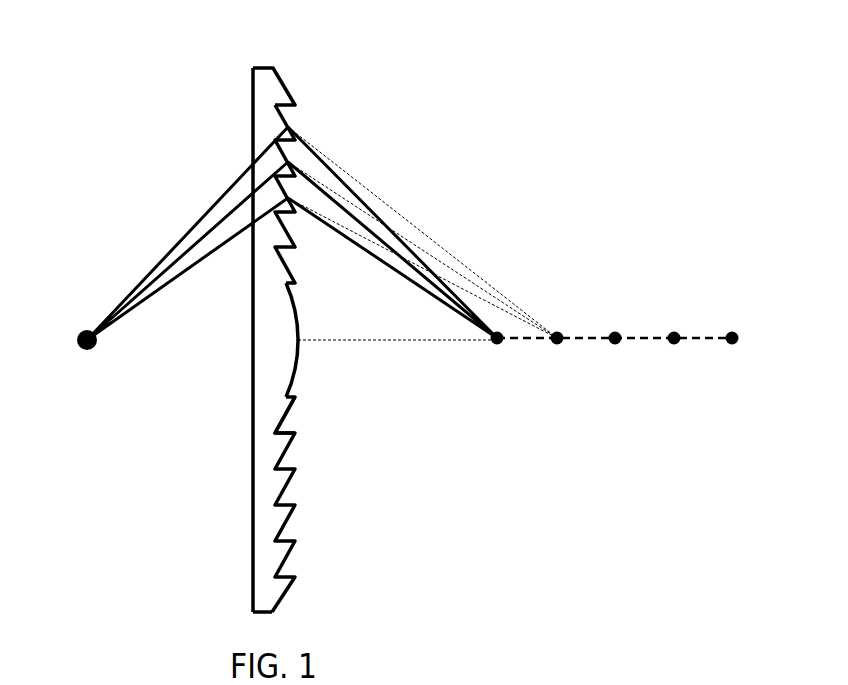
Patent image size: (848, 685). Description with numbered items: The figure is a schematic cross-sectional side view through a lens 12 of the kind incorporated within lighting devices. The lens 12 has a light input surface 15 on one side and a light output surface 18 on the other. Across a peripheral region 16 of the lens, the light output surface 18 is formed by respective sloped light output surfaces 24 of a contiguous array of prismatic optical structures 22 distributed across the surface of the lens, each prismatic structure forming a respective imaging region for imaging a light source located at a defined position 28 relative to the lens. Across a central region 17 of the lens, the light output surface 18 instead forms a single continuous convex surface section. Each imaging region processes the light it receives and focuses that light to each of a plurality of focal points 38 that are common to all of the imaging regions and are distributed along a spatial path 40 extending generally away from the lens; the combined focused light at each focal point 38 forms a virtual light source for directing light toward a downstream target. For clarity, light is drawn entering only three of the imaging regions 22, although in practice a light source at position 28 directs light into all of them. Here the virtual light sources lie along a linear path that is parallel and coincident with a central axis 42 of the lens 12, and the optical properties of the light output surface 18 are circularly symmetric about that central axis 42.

The lens 12 is at (245, 52).
The light input surface 15 is at (202, 421).
The peripheral region 16 is at (245, 399).
The central region 17 is at (243, 285).
The light output surface 18 is at (324, 409).
The prismatic optical structures 22 is at (285, 455).
The sloped light output surfaces 24 is at (287, 62).
The defined position of light source 28 is at (77, 336).
The focal points 38 is at (683, 323).
The spatial path 40 is at (580, 342).
The central axis 42 is at (413, 341).